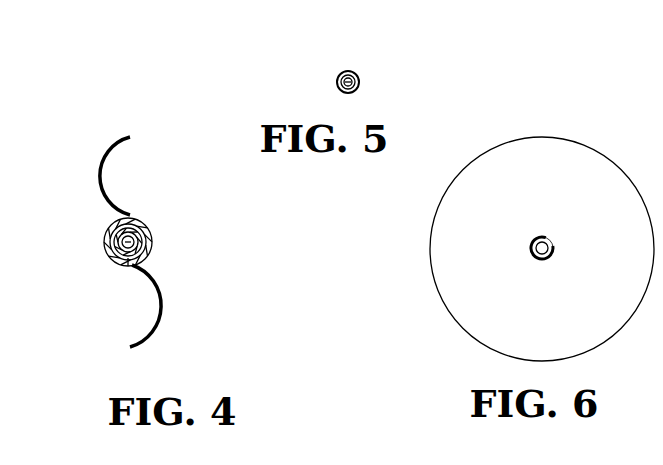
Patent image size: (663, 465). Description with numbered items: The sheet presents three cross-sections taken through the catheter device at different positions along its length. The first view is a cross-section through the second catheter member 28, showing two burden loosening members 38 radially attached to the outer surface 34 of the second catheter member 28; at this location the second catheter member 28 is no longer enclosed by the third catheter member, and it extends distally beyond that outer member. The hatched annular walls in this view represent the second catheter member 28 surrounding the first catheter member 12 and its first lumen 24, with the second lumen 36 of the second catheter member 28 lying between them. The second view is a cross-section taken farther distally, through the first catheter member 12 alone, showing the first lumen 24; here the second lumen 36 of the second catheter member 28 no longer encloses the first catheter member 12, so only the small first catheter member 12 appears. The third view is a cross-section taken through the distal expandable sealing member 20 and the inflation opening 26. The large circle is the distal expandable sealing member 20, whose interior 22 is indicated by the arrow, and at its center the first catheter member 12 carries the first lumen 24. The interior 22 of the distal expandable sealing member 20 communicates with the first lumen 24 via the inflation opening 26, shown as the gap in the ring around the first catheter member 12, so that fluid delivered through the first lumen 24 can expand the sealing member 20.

In FIG. 4, the first catheter member 12 is at (117, 260).
In FIG. 5, the first catheter member 12 is at (358, 76).
In FIG. 6, the first catheter member 12 is at (544, 262).
In FIG. 6, the distal expandable sealing member 20 is at (615, 160).
In FIG. 6, the interior 22 is at (512, 162).
In FIG. 4, the first lumen 24 is at (139, 249).
In FIG. 5, the first lumen 24 is at (357, 90).
In FIG. 6, the first lumen 24 is at (550, 262).
In FIG. 6, the inflation opening 26 is at (538, 237).
In FIG. 4, the second catheter member 28 is at (148, 226).
In FIG. 4, the outer surface 34 is at (130, 267).
In FIG. 4, the second lumen 36 is at (110, 245).
In FIG. 4, the burden loosening members 38 is at (108, 150).